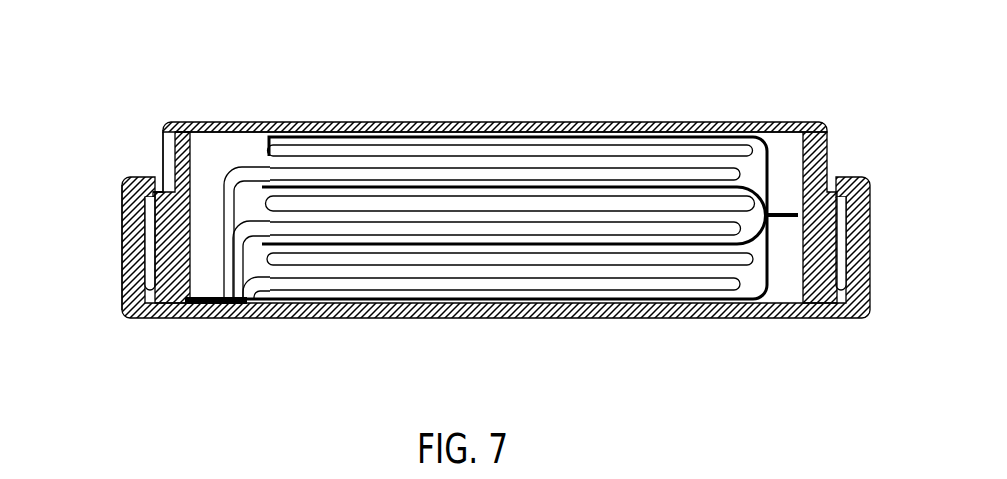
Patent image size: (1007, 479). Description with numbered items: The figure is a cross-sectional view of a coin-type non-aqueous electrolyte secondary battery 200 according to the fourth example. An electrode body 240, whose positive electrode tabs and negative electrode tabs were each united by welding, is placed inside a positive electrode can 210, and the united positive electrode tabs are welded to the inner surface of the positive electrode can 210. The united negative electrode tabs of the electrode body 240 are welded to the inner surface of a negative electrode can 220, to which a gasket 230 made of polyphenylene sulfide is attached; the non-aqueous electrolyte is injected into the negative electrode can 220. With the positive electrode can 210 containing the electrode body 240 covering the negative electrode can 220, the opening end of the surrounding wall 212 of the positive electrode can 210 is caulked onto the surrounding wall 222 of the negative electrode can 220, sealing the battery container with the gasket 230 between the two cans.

The coin-type non-aqueous electrolyte secondary battery 200 is at (797, 88).
The positive electrode can 210 is at (500, 318).
The surrounding wall 212 is at (121, 240).
The negative electrode can 220 is at (403, 120).
The surrounding wall 222 is at (160, 148).
The gasket 230 is at (158, 318).
The electrode body 240 is at (777, 272).